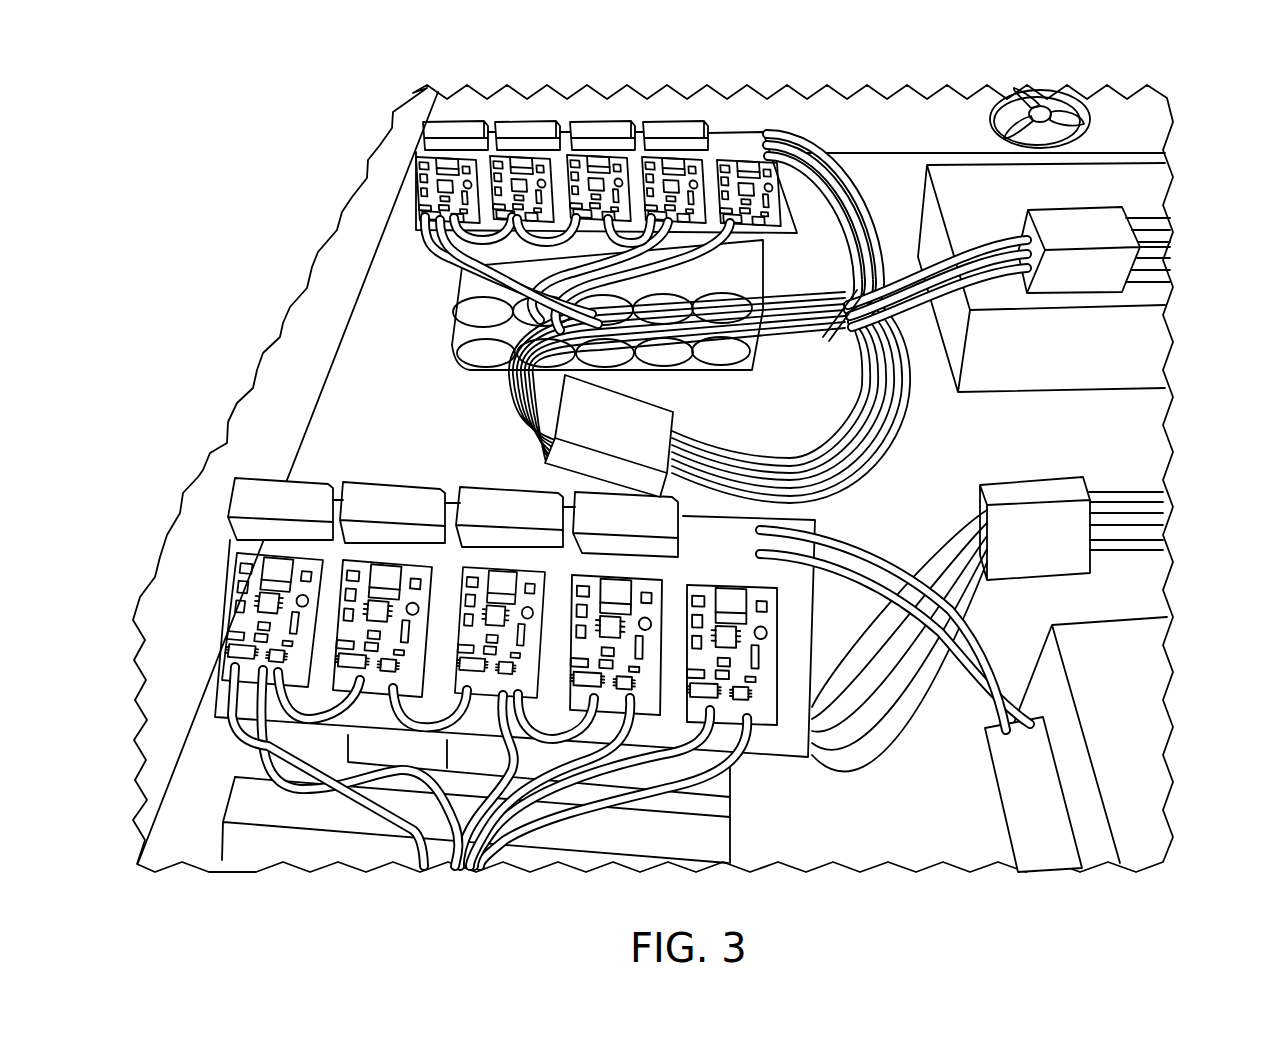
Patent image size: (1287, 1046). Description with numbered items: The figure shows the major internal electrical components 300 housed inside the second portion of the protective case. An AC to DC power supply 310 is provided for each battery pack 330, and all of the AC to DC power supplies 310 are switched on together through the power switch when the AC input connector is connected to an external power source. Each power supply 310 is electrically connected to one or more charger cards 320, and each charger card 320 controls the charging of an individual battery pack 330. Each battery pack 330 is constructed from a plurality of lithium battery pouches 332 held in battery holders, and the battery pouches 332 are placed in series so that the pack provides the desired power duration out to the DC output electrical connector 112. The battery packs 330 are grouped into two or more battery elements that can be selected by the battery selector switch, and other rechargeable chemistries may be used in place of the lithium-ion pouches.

The major internal electrical components 300 is at (160, 170).
The DC output electrical connector 112 is at (1042, 103).
The AC to DC power supply 310 is at (1160, 332).
The charger card 320 is at (678, 121).
The battery pack 330 is at (765, 140).
The battery pouch 332 is at (452, 296).